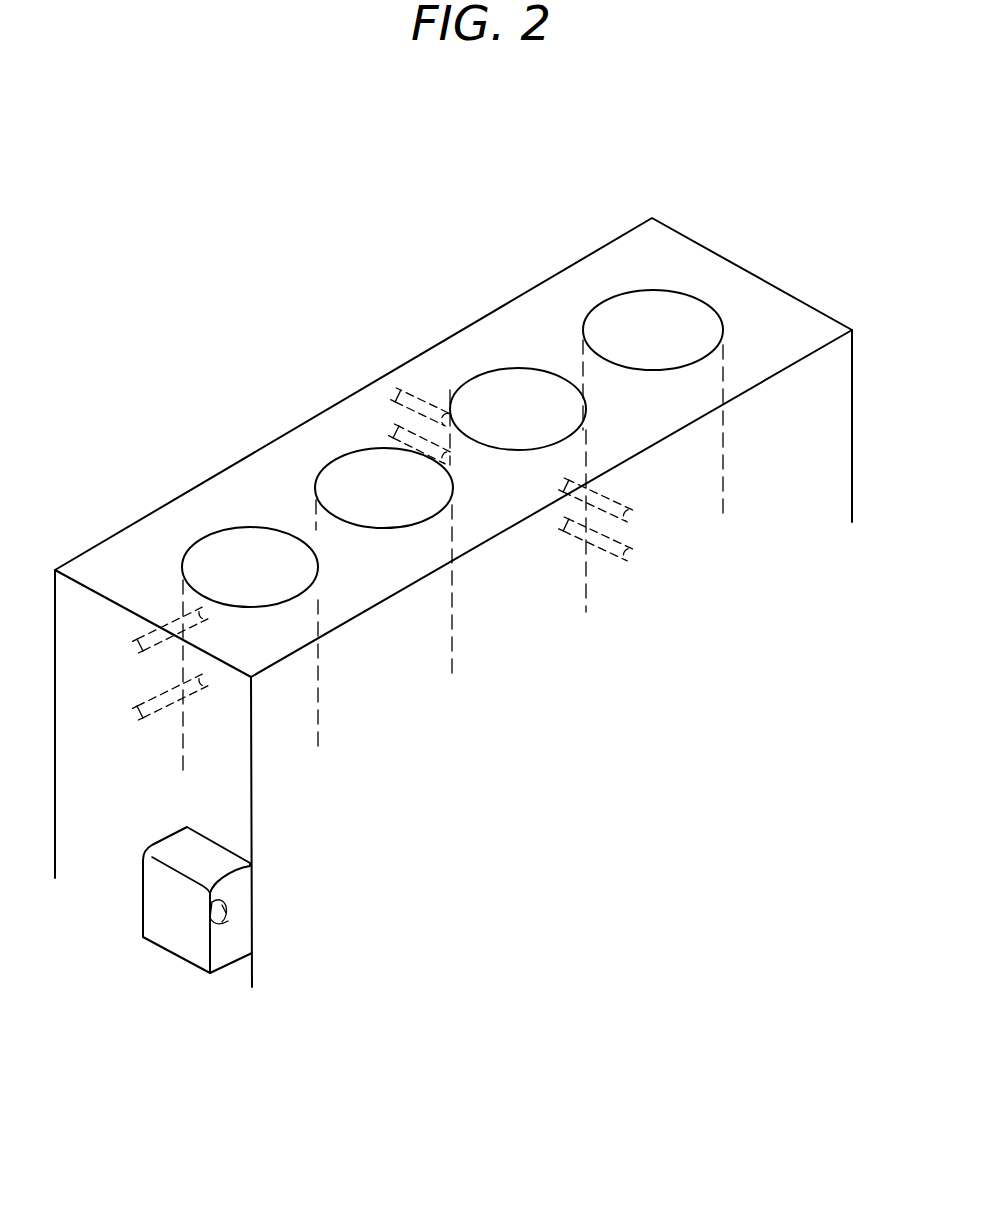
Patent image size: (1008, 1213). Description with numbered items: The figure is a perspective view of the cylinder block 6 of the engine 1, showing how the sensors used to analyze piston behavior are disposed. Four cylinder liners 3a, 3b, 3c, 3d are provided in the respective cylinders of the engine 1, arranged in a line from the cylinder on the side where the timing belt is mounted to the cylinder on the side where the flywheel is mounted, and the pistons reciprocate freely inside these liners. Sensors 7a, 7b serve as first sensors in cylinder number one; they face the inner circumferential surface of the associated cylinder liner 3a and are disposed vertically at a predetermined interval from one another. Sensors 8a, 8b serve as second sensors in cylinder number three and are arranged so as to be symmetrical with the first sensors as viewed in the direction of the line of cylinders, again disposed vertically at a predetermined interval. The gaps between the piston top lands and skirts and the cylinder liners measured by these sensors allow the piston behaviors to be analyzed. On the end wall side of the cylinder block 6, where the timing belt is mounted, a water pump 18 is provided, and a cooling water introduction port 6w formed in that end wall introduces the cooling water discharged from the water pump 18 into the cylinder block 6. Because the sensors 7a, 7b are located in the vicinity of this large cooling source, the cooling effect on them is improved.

The engine 1 is at (236, 338).
The cylinder liner 3a is at (210, 533).
The cylinder liner 3b is at (333, 484).
The cylinder liner 3c is at (497, 394).
The cylinder liner 3d is at (611, 322).
The cylinder block 6 is at (834, 382).
The cooling water introduction port 6w is at (228, 921).
The sensor 7a is at (170, 622).
The sensor 7b is at (160, 712).
The sensor 8a is at (420, 405).
The sensor 8b is at (413, 430).
The water pump 18 is at (171, 942).